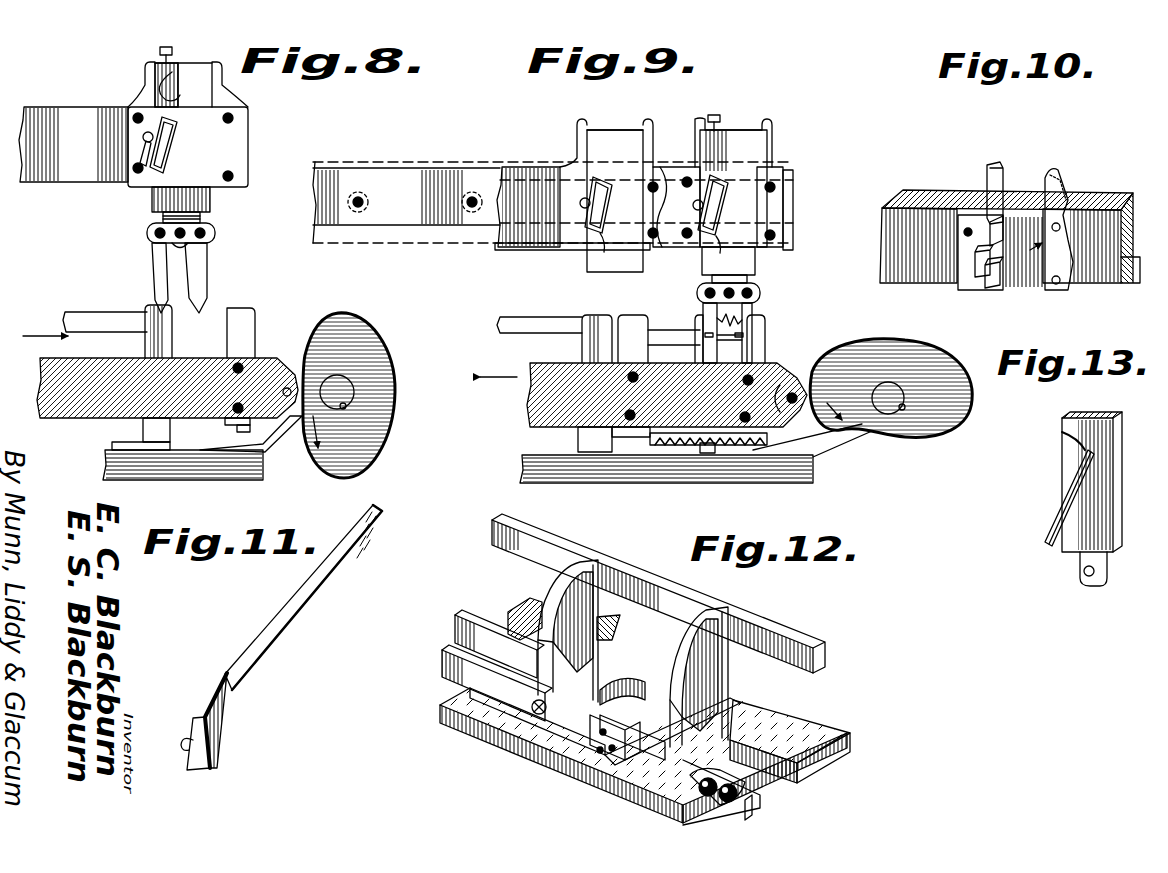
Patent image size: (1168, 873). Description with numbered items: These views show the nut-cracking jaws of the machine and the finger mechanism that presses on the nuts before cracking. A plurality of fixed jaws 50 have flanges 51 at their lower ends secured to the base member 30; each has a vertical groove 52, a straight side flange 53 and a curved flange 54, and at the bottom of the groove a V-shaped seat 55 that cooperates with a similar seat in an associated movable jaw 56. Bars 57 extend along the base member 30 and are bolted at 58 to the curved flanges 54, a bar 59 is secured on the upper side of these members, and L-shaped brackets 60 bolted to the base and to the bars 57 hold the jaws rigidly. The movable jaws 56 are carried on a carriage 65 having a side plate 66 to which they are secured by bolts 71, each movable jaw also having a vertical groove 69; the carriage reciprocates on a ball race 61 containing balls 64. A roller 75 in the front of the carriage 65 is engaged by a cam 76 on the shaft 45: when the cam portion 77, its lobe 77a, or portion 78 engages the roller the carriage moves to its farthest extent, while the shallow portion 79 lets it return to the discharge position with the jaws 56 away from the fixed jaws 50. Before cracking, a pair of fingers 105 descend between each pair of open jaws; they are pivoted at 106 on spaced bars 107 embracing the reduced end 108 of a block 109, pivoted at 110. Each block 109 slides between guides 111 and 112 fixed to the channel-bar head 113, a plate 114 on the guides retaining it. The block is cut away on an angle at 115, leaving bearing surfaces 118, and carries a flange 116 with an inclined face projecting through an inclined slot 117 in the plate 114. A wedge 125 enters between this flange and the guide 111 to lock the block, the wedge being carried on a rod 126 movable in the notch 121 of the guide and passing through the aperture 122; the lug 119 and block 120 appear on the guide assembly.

In FIG. 8, the base member 30 is at (182, 468).
In FIG. 9, the base member 30 is at (798, 470).
In FIG. 12, the base member 30 is at (510, 740).
In FIG. 8, the shaft 45 is at (346, 385).
In FIG. 9, the shaft 45 is at (893, 412).
In FIG. 8, the fixed jaws 50 is at (140, 341).
In FIG. 9, the fixed jaws 50 is at (582, 318).
In FIG. 12, the fixed jaws 50 is at (545, 575).
In FIG. 8, the flanges 51 is at (114, 446).
In FIG. 9, the flanges 51 is at (598, 455).
In FIG. 12, the vertical groove 52 is at (702, 612).
In FIG. 12, the side flange 53 is at (585, 612).
In FIG. 12, the curved flange 54 is at (530, 672).
In FIG. 12, the V-shaped seat 55 is at (572, 655).
In FIG. 8, the movable jaw 56 is at (235, 322).
In FIG. 9, the movable jaw 56 is at (658, 325).
In FIG. 12, the bars 57 is at (508, 612).
In FIG. 12, the bolts 58 is at (485, 722).
In FIG. 8, the bar 59 is at (65, 311).
In FIG. 9, the bar 59 is at (518, 316).
In FIG. 12, the bar 59 is at (816, 640).
In FIG. 12, the L-shaped brackets 60 is at (590, 755).
In FIG. 9, the ball race 61 is at (668, 456).
In FIG. 12, the ball race 61 is at (765, 812).
In FIG. 9, the balls 64 is at (716, 456).
In FIG. 12, the balls 64 is at (745, 790).
In FIG. 8, the carriage 65 is at (100, 355).
In FIG. 9, the carriage 65 is at (537, 360).
In FIG. 8, the side plate 66 is at (167, 388).
In FIG. 9, the side plate 66 is at (545, 393).
In FIG. 9, the vertical groove 69 is at (634, 318).
In FIG. 9, the bolts 71 is at (777, 378).
In FIG. 9, the roller 75 is at (800, 385).
In FIG. 8, the cam 76 is at (385, 378).
In FIG. 9, the cam 76 is at (920, 358).
In FIG. 8, the cam portion 77 is at (328, 314).
In FIG. 9, the cam portion 77 is at (810, 377).
In FIG. 8, the cam lobe 77a is at (400, 393).
In FIG. 9, the cam lobe 77a is at (890, 341).
In FIG. 8, the cam portion 78 is at (345, 482).
In FIG. 9, the cam portion 78 is at (975, 405).
In FIG. 8, the shallow portion 79 is at (307, 367).
In FIG. 9, the shallow portion 79 is at (905, 437).
In FIG. 8, the fingers 105 is at (163, 284).
In FIG. 9, the fingers 105 is at (715, 322).
In FIG. 8, the pivot 106 is at (215, 236).
In FIG. 9, the pivot 106 is at (705, 293).
In FIG. 8, the spaced bars 107 is at (158, 233).
In FIG. 9, the spaced bars 107 is at (755, 288).
In FIG. 8, the lower reduced end 108 is at (200, 217).
In FIG. 9, the lower reduced end 108 is at (729, 279).
In FIG. 13, the lower reduced end 108 is at (1080, 565).
In FIG. 8, the block 109 is at (165, 201).
In FIG. 9, the block 109 is at (615, 138).
In FIG. 13, the block 109 is at (1105, 495).
In FIG. 8, the pivot 110 is at (157, 247).
In FIG. 8, the guide 111 is at (218, 104).
In FIG. 9, the guide 111 is at (695, 135).
In FIG. 10, the guide 111 is at (985, 200).
In FIG. 8, the guide 112 is at (145, 78).
In FIG. 9, the guide 112 is at (775, 133).
In FIG. 10, the guide 112 is at (1060, 185).
In FIG. 8, the head 113 is at (53, 104).
In FIG. 9, the head 113 is at (528, 163).
In FIG. 10, the head 113 is at (1100, 215).
In FIG. 8, the plate 114 is at (228, 147).
In FIG. 9, the plate 114 is at (778, 180).
In FIG. 13, the angled cut-away 115 is at (1072, 456).
In FIG. 8, the flange 116 is at (167, 148).
In FIG. 9, the flange 116 is at (605, 208).
In FIG. 13, the flange 116 is at (1055, 515).
In FIG. 8, the inclined slot 117 is at (165, 95).
In FIG. 9, the inclined slot 117 is at (730, 198).
In FIG. 13, the bearing surfaces 118 is at (1068, 434).
In FIG. 10, the lug 119 is at (1030, 282).
In FIG. 10, the block 120 is at (988, 285).
In FIG. 10, the notch 121 is at (970, 252).
In FIG. 10, the aperture 122 is at (1012, 200).
In FIG. 8, the wedge 125 is at (140, 166).
In FIG. 9, the wedge 125 is at (772, 146).
In FIG. 11, the wedge 125 is at (215, 735).
In FIG. 8, the rod 126 is at (143, 137).
In FIG. 9, the rod 126 is at (580, 203).
In FIG. 11, the rod 126 is at (287, 628).